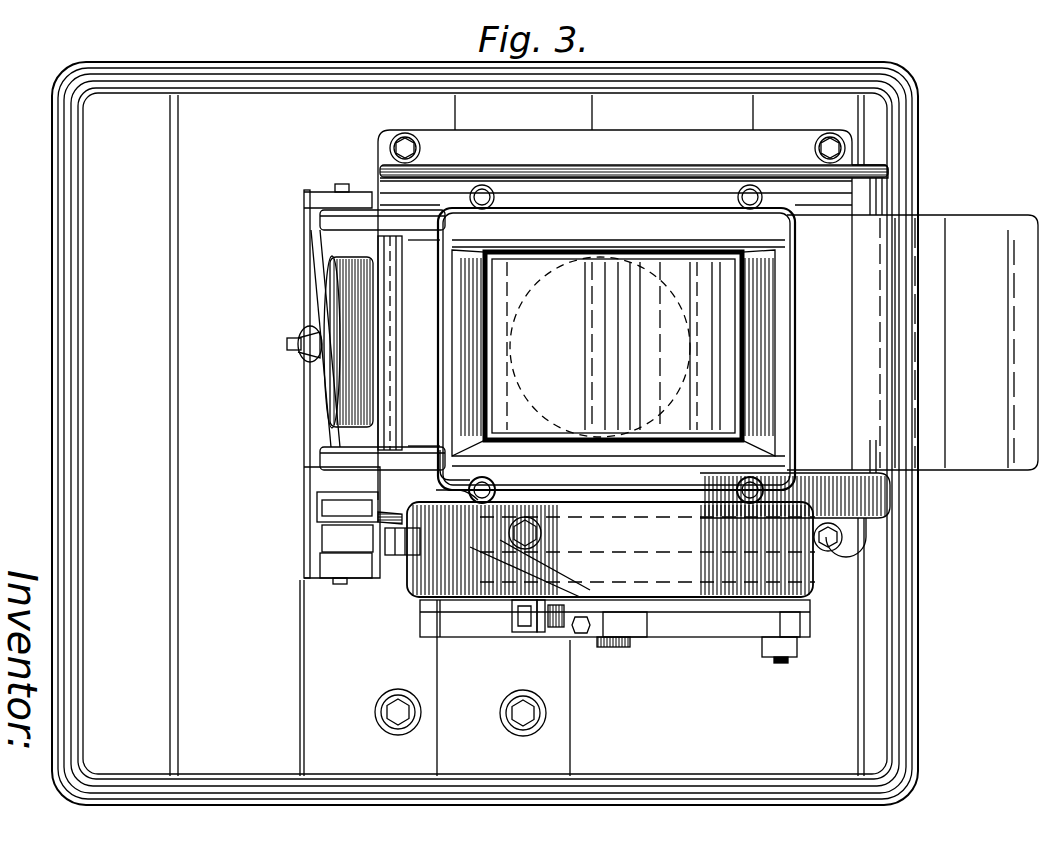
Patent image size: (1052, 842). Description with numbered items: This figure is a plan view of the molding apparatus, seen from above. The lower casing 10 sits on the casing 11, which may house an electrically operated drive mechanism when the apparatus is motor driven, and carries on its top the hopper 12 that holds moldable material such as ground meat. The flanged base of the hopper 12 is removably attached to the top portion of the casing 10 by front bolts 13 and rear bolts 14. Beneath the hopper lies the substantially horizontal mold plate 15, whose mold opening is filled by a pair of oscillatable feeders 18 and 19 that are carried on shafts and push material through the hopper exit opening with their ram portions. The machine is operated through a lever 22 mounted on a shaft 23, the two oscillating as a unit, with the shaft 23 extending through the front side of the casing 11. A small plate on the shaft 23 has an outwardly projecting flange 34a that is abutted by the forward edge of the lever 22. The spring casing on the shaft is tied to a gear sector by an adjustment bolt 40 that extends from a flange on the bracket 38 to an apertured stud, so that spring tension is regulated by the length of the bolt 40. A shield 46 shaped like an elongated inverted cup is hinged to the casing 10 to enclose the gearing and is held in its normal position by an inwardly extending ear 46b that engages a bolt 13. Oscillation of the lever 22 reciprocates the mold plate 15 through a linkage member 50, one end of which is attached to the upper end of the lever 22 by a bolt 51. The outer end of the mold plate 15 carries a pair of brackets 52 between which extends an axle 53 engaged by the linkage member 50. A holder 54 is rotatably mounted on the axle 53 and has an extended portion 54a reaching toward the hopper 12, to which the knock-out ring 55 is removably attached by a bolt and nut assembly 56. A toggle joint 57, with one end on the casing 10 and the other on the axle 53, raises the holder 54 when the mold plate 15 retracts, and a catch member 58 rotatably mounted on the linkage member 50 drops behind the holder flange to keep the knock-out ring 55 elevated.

The lower casing 10 is at (664, 176).
The casing 11 is at (60, 90).
The hopper 12 is at (790, 242).
The front bolts 13 is at (428, 368).
The rear bolts 14 is at (802, 490).
The mold plate 15 is at (962, 462).
The oscillatable feeder 18 is at (656, 338).
The oscillatable feeder 19 is at (523, 338).
The lever 22 is at (806, 629).
The shaft 23 is at (614, 648).
The outwardly projecting flange 34a is at (640, 630).
The bracket 38 is at (526, 630).
The adjustment bolt 40 is at (560, 632).
The shield 46 is at (774, 575).
The inwardly extending ear 46b is at (520, 466).
The linkage member 50 is at (320, 572).
The bolt 51 is at (790, 660).
The brackets 52 is at (306, 224).
The axle 53 is at (346, 585).
The holder 54 is at (314, 382).
The extended portion 54a is at (332, 547).
The knock-out ring 55 is at (345, 291).
The bolt and nut assembly 56 is at (302, 333).
The toggle joint 57 is at (322, 518).
The catch member 58 is at (398, 556).